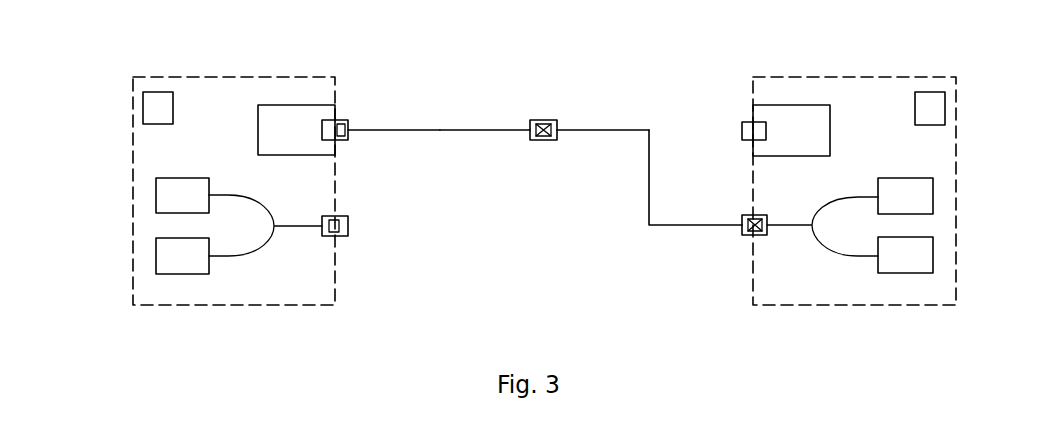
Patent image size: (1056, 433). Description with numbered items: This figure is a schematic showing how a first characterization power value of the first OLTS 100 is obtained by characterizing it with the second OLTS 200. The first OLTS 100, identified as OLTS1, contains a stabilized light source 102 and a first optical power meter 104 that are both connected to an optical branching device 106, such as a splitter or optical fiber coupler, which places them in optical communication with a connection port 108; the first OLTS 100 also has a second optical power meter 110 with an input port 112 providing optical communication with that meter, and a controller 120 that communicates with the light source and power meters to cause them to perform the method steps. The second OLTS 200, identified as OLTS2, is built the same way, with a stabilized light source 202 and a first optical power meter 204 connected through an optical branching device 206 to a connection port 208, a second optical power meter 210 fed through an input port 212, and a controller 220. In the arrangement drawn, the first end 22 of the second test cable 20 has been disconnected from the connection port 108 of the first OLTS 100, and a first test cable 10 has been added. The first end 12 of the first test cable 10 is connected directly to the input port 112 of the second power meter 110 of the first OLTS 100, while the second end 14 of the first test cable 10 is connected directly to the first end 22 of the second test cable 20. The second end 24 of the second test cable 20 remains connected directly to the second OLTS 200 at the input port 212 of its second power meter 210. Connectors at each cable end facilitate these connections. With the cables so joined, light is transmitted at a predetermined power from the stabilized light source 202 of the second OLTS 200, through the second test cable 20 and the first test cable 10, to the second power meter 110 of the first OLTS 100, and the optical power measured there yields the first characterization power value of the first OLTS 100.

The first test cable 10 is at (440, 130).
The first end of the first test cable 12 is at (344, 141).
The second end of the first test cable 14 is at (530, 121).
The second test cable 20 is at (601, 131).
The first end of the second test cable 22 is at (552, 120).
The second end of the second test cable 24 is at (747, 237).
The first OLTS 100 is at (283, 77).
The stabilized light source of the first OLTS 102 is at (175, 263).
The first optical power meter of the first OLTS 104 is at (169, 184).
The optical branching device of the first OLTS 106 is at (248, 197).
The connection port of the first OLTS 108 is at (335, 237).
The second optical power meter of the first OLTS 110 is at (268, 118).
The input port of the first OLTS 112 is at (340, 127).
The controller of the first OLTS 120 is at (152, 108).
The second OLTS 200 is at (905, 77).
The stabilized light source of the second OLTS 202 is at (918, 266).
The first optical power meter of the second OLTS 204 is at (886, 183).
The optical branching device of the second OLTS 206 is at (845, 198).
The connection port of the second OLTS 208 is at (760, 237).
The second optical power meter of the second OLTS 210 is at (815, 128).
The input port of the second OLTS 212 is at (746, 139).
The controller of the second OLTS 220 is at (935, 108).